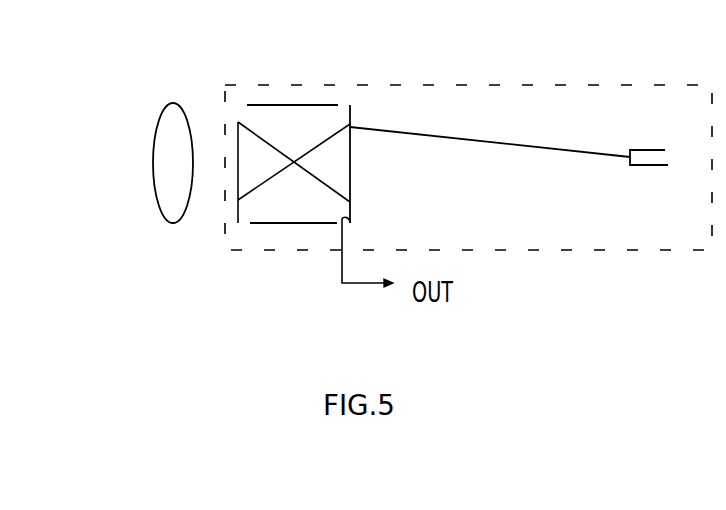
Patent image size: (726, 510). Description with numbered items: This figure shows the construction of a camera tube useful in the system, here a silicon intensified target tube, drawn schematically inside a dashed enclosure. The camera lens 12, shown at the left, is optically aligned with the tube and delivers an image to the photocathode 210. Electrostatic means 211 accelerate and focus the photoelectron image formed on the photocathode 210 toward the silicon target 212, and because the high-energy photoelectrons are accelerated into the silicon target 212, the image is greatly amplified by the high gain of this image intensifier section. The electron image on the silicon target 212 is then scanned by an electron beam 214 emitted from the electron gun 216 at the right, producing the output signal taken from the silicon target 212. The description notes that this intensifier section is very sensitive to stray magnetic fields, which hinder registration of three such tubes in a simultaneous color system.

The camera lens 12 is at (160, 117).
The photocathode 210 is at (238, 122).
The electrostatic means 211 is at (262, 223).
The silicon target 212 is at (352, 107).
The electron beam 214 is at (408, 137).
The electron gun 216 is at (630, 150).